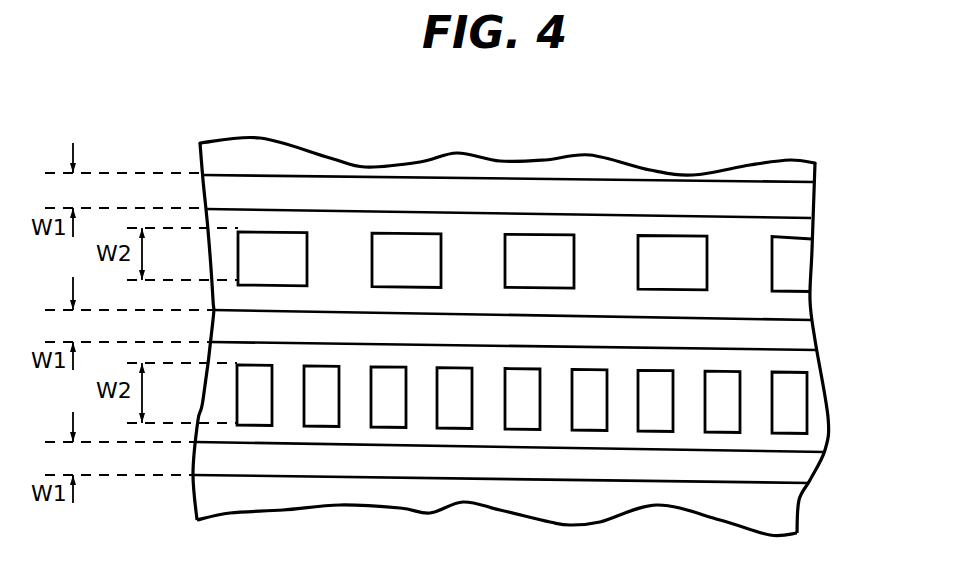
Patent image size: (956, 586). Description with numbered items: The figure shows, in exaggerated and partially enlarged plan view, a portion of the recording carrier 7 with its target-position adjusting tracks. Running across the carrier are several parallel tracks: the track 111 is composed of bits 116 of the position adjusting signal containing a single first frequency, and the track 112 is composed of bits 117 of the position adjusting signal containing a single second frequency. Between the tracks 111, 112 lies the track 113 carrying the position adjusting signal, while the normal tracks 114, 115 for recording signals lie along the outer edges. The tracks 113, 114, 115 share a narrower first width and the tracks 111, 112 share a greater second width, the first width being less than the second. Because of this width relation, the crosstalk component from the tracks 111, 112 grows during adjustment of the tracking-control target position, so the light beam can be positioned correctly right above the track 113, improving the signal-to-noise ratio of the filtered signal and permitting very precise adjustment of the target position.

The recording carrier 7 is at (737, 170).
The track 111 is at (566, 199).
The track 112 is at (566, 461).
The track 113 is at (782, 338).
The normal track 114 is at (782, 205).
The normal track 115 is at (782, 473).
The bit 116 is at (297, 247).
The bit 117 is at (257, 410).